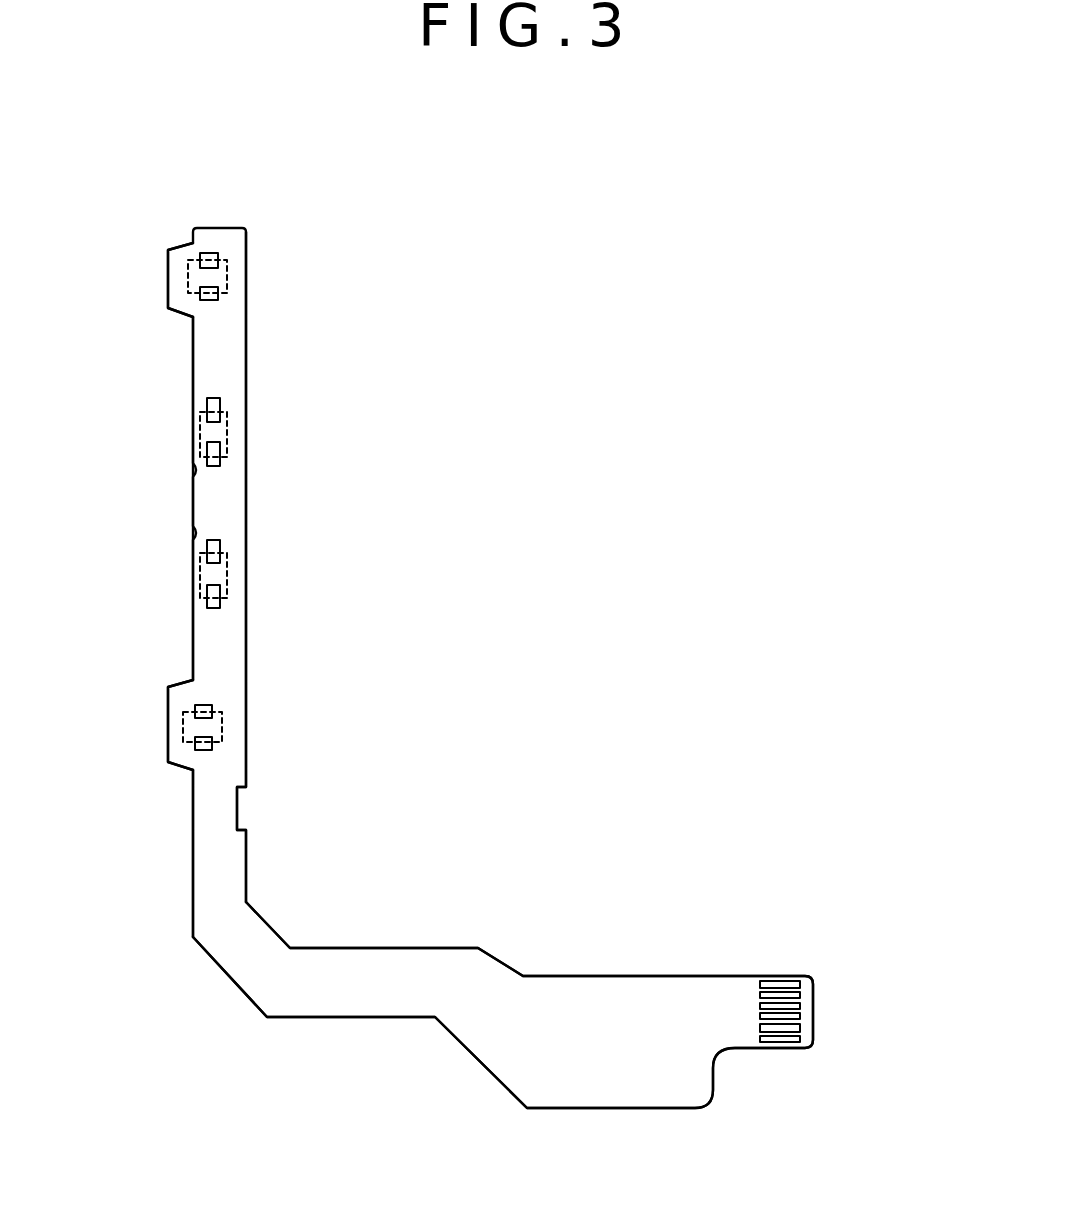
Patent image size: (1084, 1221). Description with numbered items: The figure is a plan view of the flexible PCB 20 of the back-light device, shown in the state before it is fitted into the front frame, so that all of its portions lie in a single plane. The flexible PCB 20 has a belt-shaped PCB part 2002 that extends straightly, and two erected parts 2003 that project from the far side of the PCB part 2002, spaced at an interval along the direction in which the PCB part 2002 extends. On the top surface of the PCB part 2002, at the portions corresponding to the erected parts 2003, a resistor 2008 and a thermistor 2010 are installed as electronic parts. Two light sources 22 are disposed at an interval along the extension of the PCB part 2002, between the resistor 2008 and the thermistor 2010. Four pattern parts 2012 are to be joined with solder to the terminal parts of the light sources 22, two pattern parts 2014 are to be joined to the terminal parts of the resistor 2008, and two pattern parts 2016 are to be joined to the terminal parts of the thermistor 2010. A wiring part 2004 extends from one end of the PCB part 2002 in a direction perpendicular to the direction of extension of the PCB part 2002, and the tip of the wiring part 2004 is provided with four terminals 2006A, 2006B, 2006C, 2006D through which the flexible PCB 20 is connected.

The flexible PCB 20 is at (452, 676).
The PCB part 2002 is at (246, 853).
The erected parts 2003 is at (168, 292).
The wiring part 2004 is at (617, 974).
The terminal 2006A is at (802, 983).
The terminal 2006B is at (802, 995).
The terminal 2006C is at (802, 1025).
The terminal 2006D is at (802, 1038).
The resistor 2008 is at (227, 280).
The thermistor 2010 is at (222, 730).
The pattern parts 2012 is at (218, 397).
The pattern parts 2014 is at (208, 253).
The pattern parts 2016 is at (212, 705).
The light sources 22 is at (229, 438).